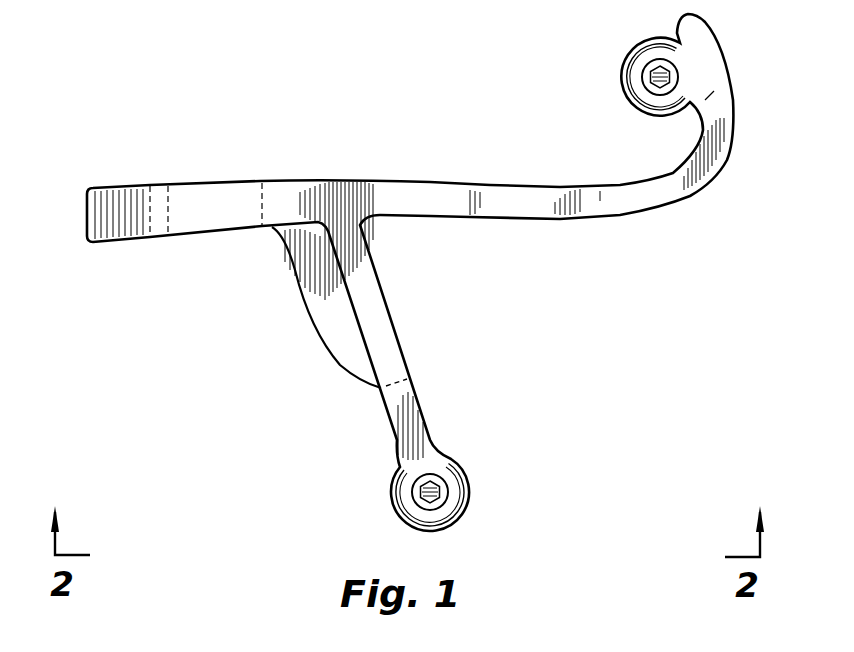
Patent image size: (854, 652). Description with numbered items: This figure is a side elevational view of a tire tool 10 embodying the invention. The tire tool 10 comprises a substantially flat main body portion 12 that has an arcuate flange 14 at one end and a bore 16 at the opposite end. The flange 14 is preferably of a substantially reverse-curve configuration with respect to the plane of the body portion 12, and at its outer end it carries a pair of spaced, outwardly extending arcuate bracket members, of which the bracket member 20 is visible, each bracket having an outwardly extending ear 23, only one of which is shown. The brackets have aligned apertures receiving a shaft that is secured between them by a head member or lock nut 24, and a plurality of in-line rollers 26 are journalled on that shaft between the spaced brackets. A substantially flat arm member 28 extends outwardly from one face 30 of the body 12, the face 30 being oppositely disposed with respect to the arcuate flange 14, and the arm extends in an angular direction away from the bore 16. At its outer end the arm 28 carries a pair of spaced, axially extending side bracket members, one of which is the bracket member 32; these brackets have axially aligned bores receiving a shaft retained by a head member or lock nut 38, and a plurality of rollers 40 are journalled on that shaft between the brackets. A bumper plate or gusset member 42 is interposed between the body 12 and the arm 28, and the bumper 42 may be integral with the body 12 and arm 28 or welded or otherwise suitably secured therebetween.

The tire tool 10 is at (206, 282).
The main body portion 12 is at (427, 182).
The arcuate flange 14 is at (728, 137).
The bore 16 is at (155, 205).
The arcuate bracket member 20 is at (717, 82).
The ear 23 is at (697, 33).
The lock nut 24 is at (643, 80).
The rollers 26 is at (640, 43).
The arm member 28 is at (408, 392).
The face 30 is at (477, 220).
The side bracket member 32 is at (427, 431).
The lock nut 38 is at (418, 492).
The rollers 40 is at (463, 471).
The bumper plate 42 is at (320, 323).